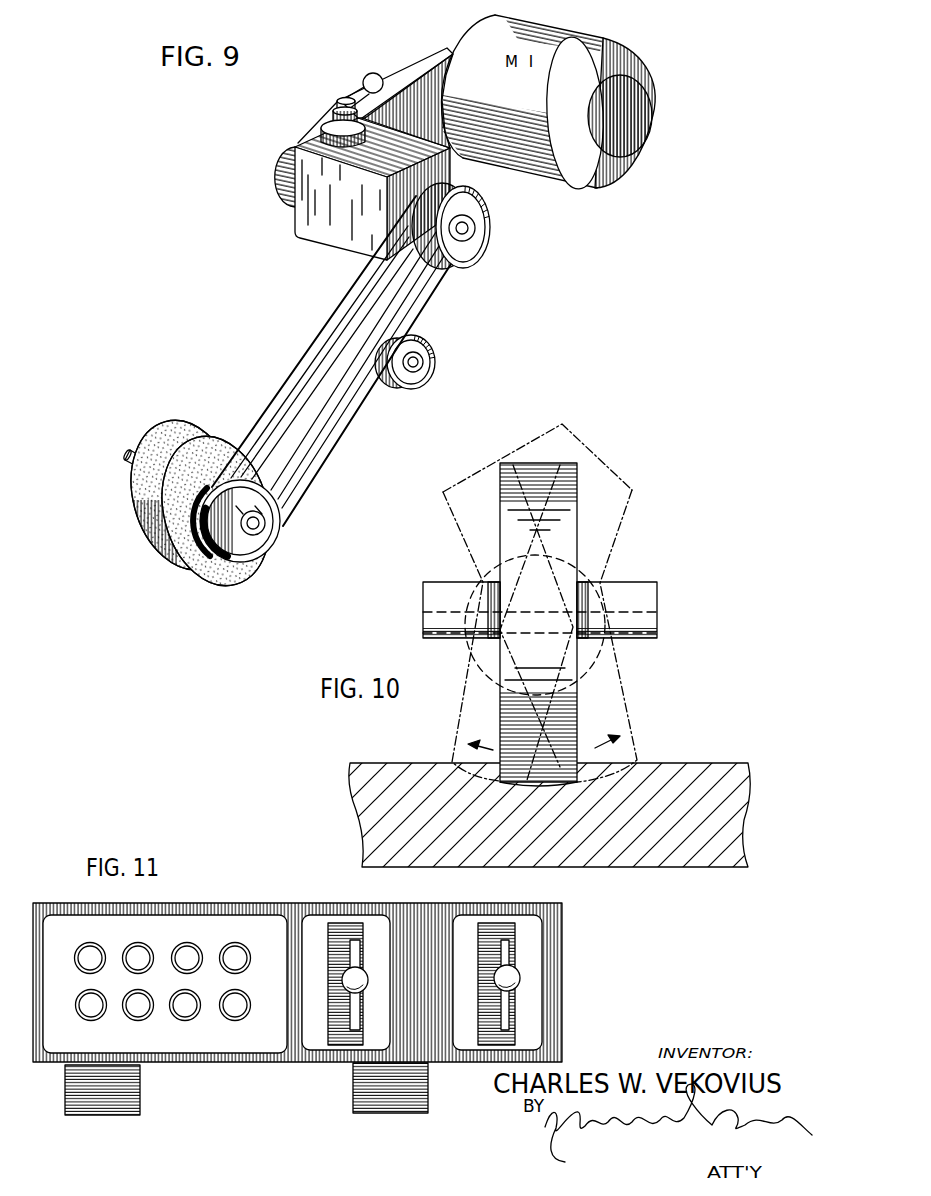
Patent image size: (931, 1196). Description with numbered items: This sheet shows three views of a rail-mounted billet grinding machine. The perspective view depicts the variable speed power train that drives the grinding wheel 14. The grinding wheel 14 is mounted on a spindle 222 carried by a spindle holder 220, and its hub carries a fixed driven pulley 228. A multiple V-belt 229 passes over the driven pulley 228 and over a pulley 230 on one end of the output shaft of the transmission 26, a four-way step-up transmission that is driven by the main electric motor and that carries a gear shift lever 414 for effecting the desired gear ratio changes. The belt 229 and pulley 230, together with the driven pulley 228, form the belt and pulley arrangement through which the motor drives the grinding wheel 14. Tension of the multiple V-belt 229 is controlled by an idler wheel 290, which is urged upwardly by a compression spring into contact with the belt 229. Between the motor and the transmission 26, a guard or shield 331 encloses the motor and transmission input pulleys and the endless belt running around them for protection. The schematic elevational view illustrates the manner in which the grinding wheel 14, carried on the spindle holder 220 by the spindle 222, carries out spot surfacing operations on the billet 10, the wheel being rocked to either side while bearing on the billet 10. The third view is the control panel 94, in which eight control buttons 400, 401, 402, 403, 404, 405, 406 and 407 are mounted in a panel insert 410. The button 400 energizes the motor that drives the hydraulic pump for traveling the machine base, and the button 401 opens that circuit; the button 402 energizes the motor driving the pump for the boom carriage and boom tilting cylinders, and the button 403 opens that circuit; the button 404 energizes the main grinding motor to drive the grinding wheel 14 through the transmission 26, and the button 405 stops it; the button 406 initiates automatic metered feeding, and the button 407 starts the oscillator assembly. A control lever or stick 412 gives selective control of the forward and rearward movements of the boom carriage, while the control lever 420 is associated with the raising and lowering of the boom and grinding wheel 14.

In FIG. 9, the grinding wheel 14 is at (187, 418).
In FIG. 10, the grinding wheel 14 is at (559, 425).
In FIG. 9, the spindle 222 is at (129, 468).
In FIG. 10, the spindle 222 is at (587, 617).
In FIG. 9, the fixed driven pulley 228 is at (272, 503).
In FIG. 9, the multiple V-belt 229 is at (343, 410).
In FIG. 9, the pulley 230 is at (472, 246).
In FIG. 9, the idler wheel 290 is at (427, 368).
In FIG. 9, the transmission 26 is at (359, 219).
In FIG. 9, the guard or shield 331 is at (412, 77).
In FIG. 9, the gear shift lever 414 is at (353, 98).
In FIG. 10, the spindle holder 220 is at (648, 622).
In FIG. 10, the billet 10 is at (704, 803).
In FIG. 11, the control panel 94 is at (193, 906).
In FIG. 11, the panel insert 410 is at (121, 925).
In FIG. 11, the control button 400 is at (86, 952).
In FIG. 11, the control button 401 is at (88, 1012).
In FIG. 11, the control button 402 is at (141, 950).
In FIG. 11, the control button 403 is at (136, 1013).
In FIG. 11, the control button 404 is at (192, 953).
In FIG. 11, the control button 405 is at (188, 1014).
In FIG. 11, the control button 406 is at (240, 950).
In FIG. 11, the control button 407 is at (233, 1013).
In FIG. 11, the control lever or stick 412 is at (368, 981).
In FIG. 11, the control lever 420 is at (521, 978).